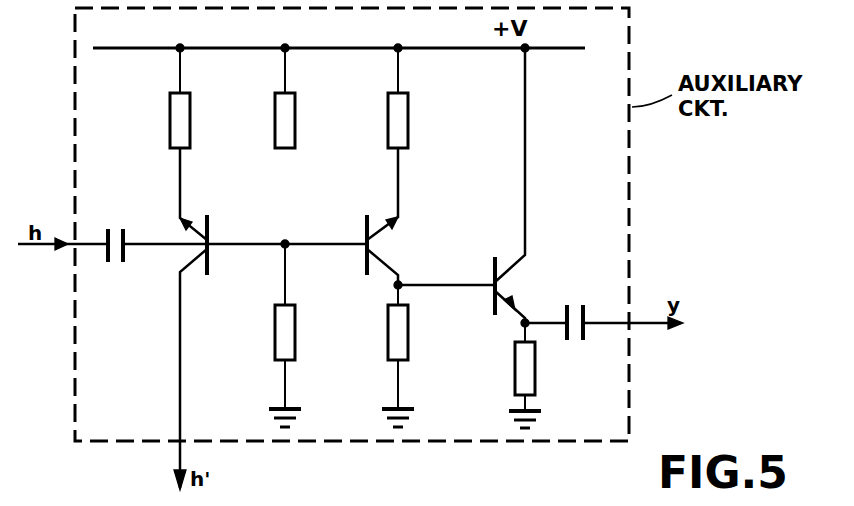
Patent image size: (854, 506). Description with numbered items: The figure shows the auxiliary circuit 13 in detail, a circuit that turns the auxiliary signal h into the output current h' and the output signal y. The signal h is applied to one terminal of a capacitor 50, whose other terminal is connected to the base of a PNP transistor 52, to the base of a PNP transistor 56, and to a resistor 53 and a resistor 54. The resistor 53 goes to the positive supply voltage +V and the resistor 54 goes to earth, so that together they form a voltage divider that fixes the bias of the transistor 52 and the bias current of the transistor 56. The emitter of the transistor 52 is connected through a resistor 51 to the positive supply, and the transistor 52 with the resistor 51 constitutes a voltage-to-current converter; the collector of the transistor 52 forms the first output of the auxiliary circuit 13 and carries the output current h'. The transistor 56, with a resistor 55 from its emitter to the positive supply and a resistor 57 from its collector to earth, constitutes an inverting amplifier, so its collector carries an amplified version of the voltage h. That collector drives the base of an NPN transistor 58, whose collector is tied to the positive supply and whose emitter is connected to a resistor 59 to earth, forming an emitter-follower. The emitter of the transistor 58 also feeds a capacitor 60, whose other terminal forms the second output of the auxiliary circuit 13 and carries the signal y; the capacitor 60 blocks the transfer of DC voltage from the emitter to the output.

The auxiliary circuit 13 is at (470, 444).
The capacitor 50 is at (126, 237).
The resistor 51 is at (183, 125).
The PNP transistor 52 is at (210, 237).
The resistor 53 is at (288, 125).
The resistor 54 is at (288, 336).
The resistor 55 is at (401, 125).
The PNP transistor 56 is at (382, 244).
The resistor 57 is at (401, 336).
The NPN transistor 58 is at (508, 286).
The resistor 59 is at (528, 372).
The capacitor 60 is at (586, 318).